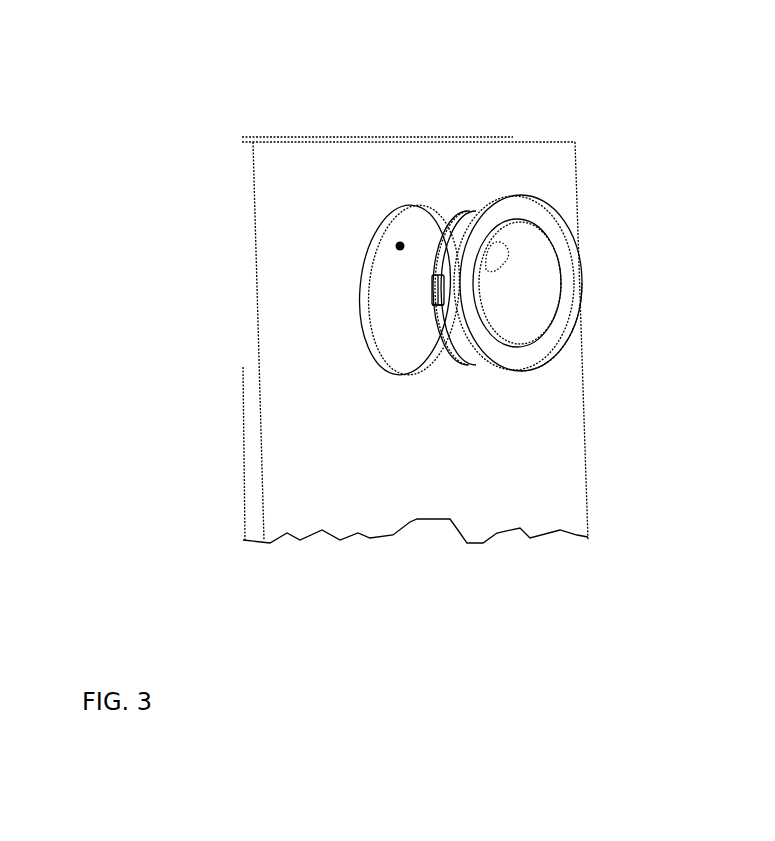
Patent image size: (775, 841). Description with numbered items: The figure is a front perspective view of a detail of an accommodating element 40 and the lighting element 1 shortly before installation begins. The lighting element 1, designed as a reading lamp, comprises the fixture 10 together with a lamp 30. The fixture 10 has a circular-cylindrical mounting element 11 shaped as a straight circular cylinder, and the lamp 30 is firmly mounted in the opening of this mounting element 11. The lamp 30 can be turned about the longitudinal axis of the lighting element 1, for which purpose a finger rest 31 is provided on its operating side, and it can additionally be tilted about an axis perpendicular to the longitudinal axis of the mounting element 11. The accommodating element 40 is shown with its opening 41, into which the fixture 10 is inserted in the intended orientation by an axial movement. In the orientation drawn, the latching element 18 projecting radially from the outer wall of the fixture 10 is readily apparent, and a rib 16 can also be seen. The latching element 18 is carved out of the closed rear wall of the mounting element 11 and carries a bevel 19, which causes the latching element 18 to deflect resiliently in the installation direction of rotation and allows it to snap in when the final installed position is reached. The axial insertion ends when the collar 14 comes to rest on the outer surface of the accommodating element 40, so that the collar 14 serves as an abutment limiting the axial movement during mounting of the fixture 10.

The lighting element 1 is at (573, 120).
The fixture 10 is at (573, 120).
The mounting element 11 is at (537, 200).
The collar 14 is at (533, 352).
The rib 16 is at (467, 215).
The latching element 18 is at (440, 297).
The bevel 19 is at (438, 288).
The lamp 30 is at (542, 318).
The finger rest 31 is at (503, 263).
The accommodating element 40 is at (290, 195).
The opening 41 is at (400, 245).